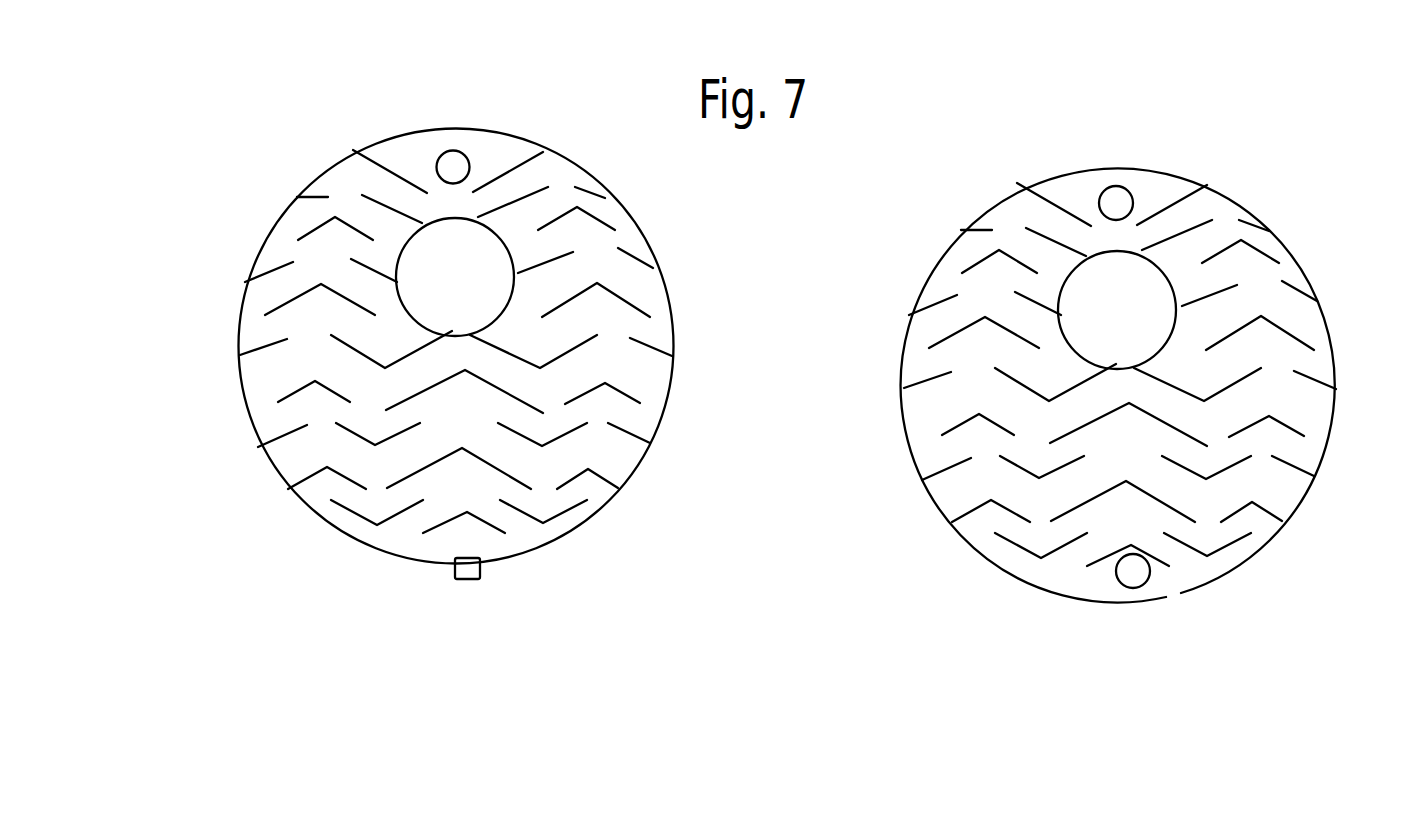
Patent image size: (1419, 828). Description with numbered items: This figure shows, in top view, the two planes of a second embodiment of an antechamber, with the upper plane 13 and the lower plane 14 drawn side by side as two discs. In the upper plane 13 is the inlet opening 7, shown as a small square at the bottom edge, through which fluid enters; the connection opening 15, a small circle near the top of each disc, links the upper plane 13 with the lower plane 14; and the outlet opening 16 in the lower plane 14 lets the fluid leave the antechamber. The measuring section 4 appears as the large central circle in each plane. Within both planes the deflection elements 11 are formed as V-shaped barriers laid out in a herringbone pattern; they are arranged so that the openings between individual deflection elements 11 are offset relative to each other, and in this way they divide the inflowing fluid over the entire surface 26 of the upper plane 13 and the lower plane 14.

The measuring section 4 is at (430, 277).
The inlet opening 7 is at (463, 578).
The deflection elements 11 is at (350, 425).
The upper plane 13 is at (567, 566).
The lower plane 14 is at (961, 565).
The connection opening 15 is at (445, 156).
The outlet opening 16 is at (1131, 586).
The surface 26 is at (280, 367).